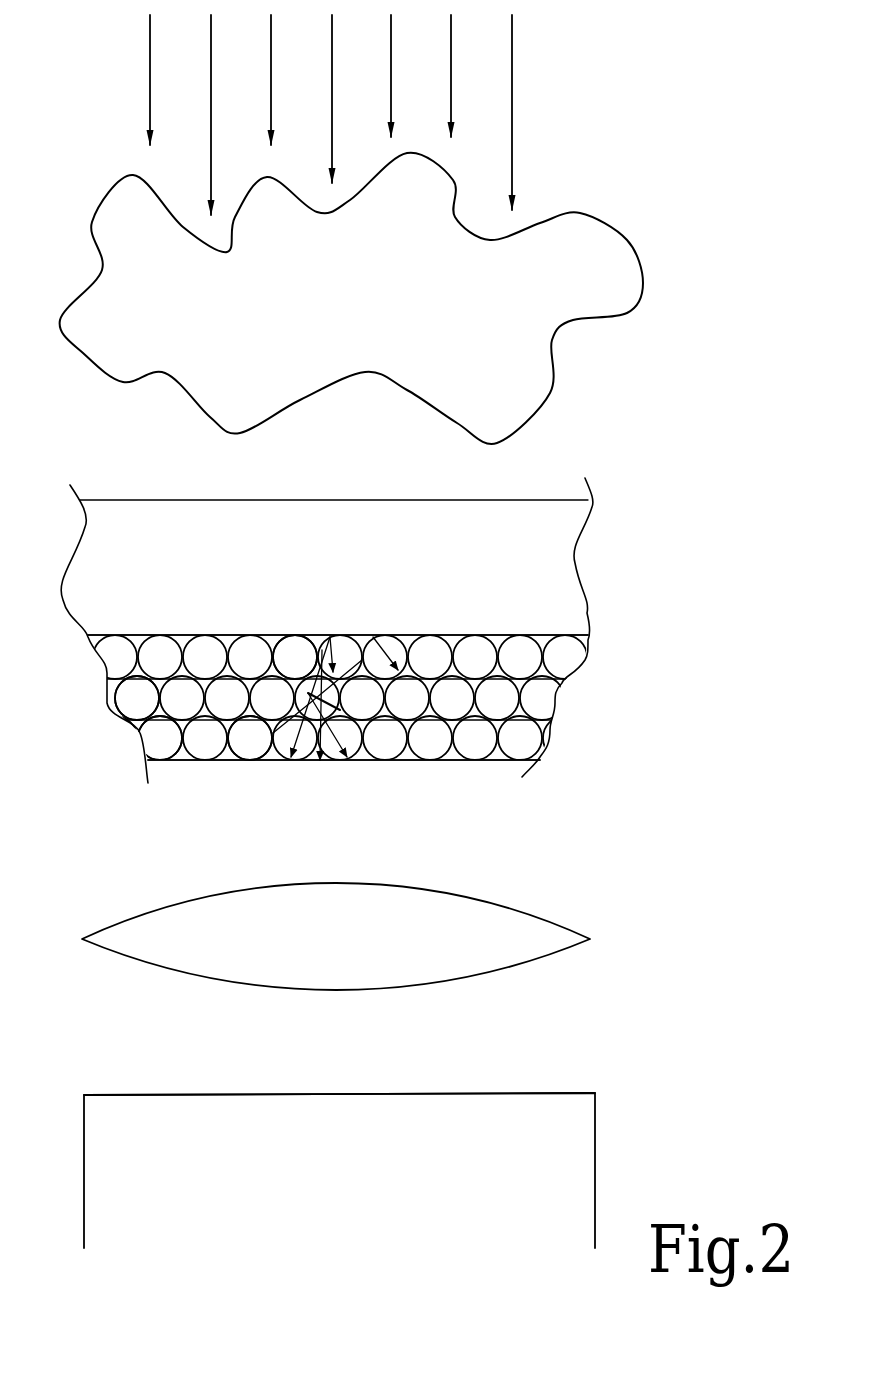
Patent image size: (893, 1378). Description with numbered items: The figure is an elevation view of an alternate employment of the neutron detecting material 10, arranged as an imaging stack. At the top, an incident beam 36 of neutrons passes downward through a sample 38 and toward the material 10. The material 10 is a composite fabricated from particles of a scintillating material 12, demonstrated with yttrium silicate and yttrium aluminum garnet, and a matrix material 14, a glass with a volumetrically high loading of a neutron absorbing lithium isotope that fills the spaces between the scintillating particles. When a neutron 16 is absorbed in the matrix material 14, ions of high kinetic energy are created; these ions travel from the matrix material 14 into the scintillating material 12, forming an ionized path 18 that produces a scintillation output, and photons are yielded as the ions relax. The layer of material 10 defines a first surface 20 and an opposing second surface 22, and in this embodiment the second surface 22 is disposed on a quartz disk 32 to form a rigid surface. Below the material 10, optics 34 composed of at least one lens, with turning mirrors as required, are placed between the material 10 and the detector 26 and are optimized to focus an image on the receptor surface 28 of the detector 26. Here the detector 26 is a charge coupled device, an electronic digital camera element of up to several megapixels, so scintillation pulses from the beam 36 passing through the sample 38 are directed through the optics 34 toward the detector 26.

The neutron detecting material 10 is at (562, 697).
The scintillating material 12 is at (157, 736).
The matrix material 14 is at (276, 637).
The neutron 16 is at (343, 707).
The ionized path 18 is at (275, 733).
The first surface 20 is at (512, 634).
The second surface 22 is at (432, 761).
The detector 26 is at (442, 1176).
The receptor surface 28 is at (460, 1093).
The quartz disk 32 is at (541, 518).
The optics 34 is at (152, 922).
The incident beam 36 is at (211, 60).
The sample 38 is at (344, 316).